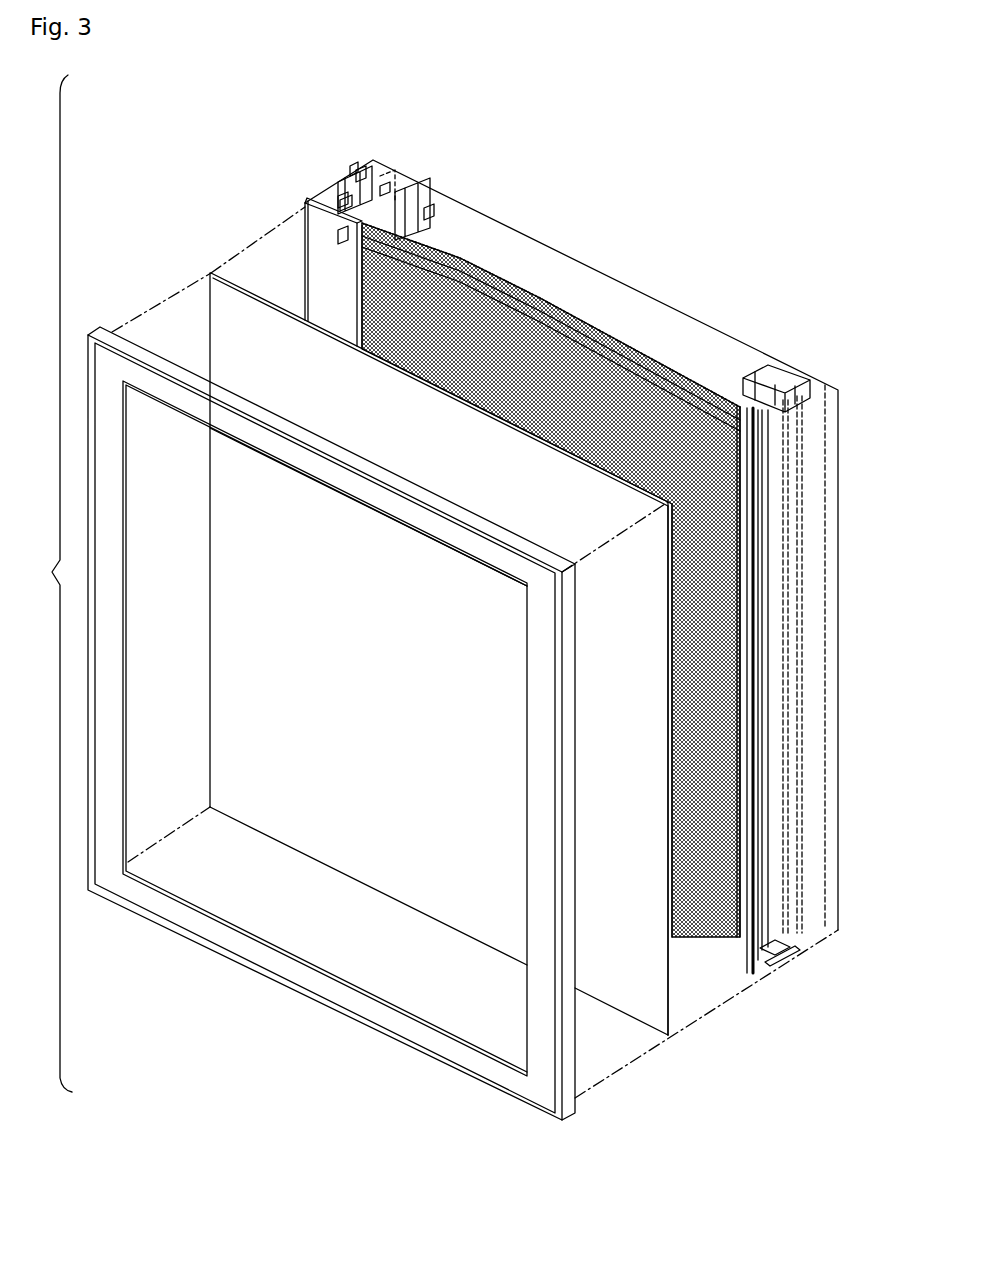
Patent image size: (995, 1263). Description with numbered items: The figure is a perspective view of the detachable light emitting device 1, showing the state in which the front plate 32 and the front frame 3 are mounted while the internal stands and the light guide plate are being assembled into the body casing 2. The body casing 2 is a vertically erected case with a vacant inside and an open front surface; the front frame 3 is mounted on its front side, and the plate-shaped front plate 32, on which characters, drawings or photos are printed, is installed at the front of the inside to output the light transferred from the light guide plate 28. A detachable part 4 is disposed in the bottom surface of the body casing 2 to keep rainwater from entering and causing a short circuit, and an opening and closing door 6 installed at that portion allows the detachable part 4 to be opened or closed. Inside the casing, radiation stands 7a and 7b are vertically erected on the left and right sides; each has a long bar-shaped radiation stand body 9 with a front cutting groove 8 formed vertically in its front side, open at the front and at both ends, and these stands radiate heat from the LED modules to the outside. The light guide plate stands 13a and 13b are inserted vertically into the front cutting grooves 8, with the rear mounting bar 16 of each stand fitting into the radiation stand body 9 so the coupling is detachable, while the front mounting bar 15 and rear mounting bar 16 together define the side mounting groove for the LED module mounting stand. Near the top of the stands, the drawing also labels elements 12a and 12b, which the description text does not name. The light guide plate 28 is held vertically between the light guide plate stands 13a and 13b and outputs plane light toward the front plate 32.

The detachable light emitting device 1 is at (52, 583).
The body casing 2 is at (545, 559).
The front frame 3 is at (282, 967).
The detachable part 4 is at (774, 950).
The opening and closing door 6 is at (772, 943).
The radiation stand 7a is at (385, 164).
The radiation stand 7b is at (780, 378).
The front cutting groove 8 is at (360, 174).
The radiation stand body 9 is at (383, 190).
The first guide 12a is at (357, 168).
The second guide 12b is at (430, 213).
The light guide plate stand 13a is at (343, 203).
The light guide plate stand 13b is at (750, 613).
The front mounting bar 15 is at (343, 236).
The rear mounting bar 16 is at (340, 196).
The light guide plate 28 is at (620, 337).
The front plate 32 is at (617, 997).